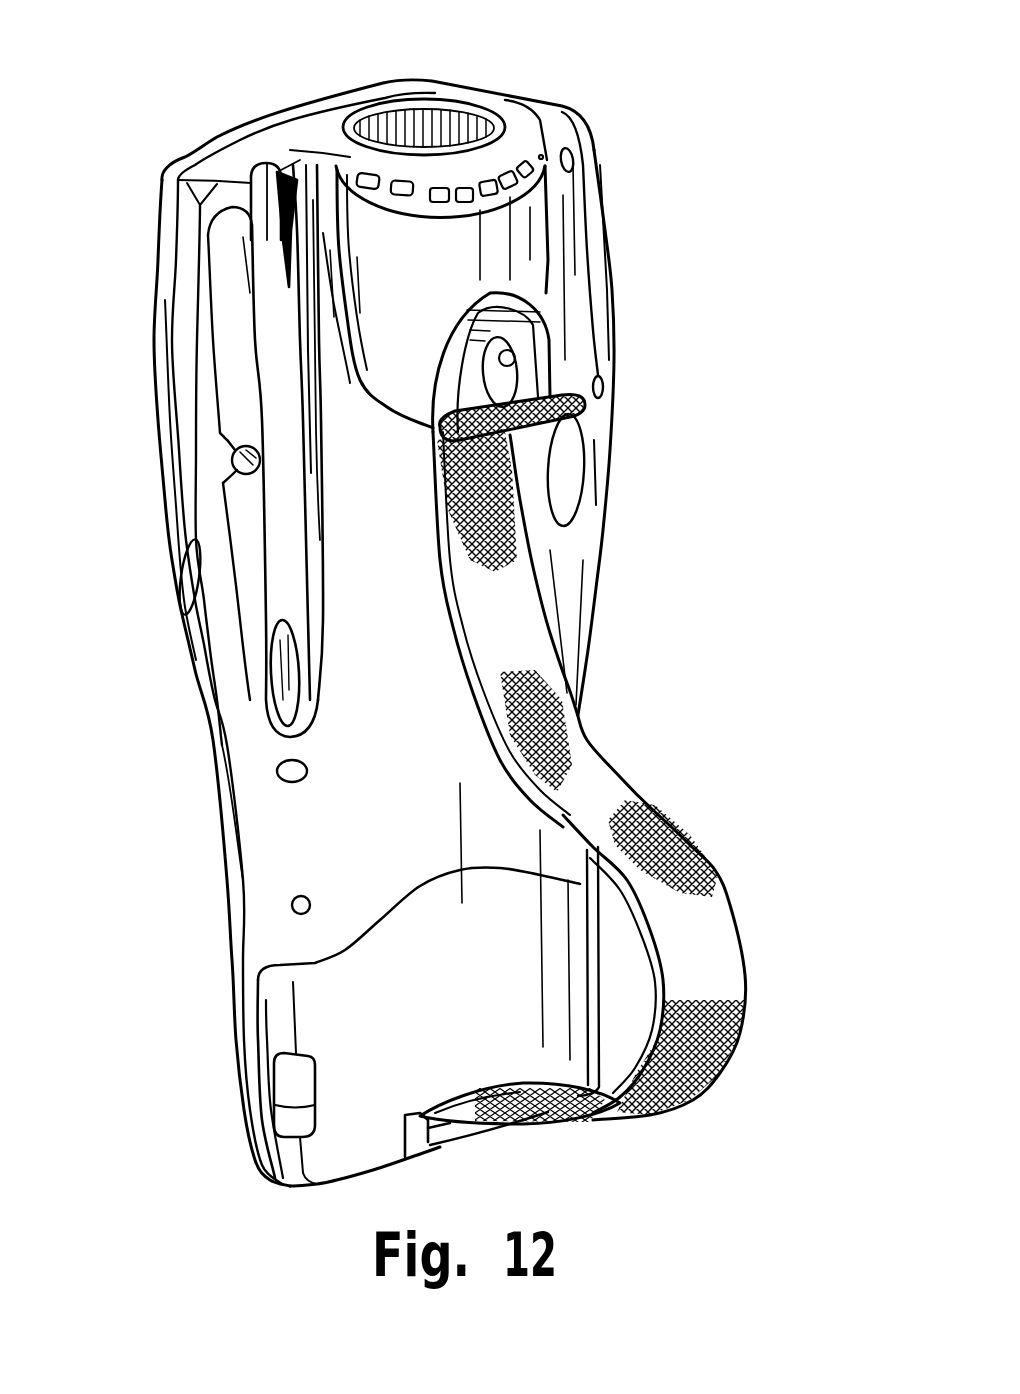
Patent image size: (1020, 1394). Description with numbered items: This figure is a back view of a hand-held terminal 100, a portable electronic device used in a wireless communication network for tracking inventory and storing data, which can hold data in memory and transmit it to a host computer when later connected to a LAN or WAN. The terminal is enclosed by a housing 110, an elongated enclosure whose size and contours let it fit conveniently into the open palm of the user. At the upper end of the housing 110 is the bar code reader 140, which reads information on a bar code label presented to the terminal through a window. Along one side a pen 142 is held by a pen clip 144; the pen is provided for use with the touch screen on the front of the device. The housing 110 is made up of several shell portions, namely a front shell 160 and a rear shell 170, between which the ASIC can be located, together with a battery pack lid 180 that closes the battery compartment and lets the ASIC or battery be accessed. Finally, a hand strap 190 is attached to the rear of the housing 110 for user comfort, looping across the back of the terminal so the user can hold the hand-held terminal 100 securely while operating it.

The hand-held terminal 100 is at (593, 72).
The housing 110 is at (607, 285).
The bar code reader 140 is at (380, 132).
The pen 142 is at (265, 180).
The pen clip 144 is at (230, 283).
The front shell 160 is at (217, 745).
The rear shell 170 is at (240, 675).
The battery pack lid 180 is at (278, 1036).
The hand strap 190 is at (715, 893).